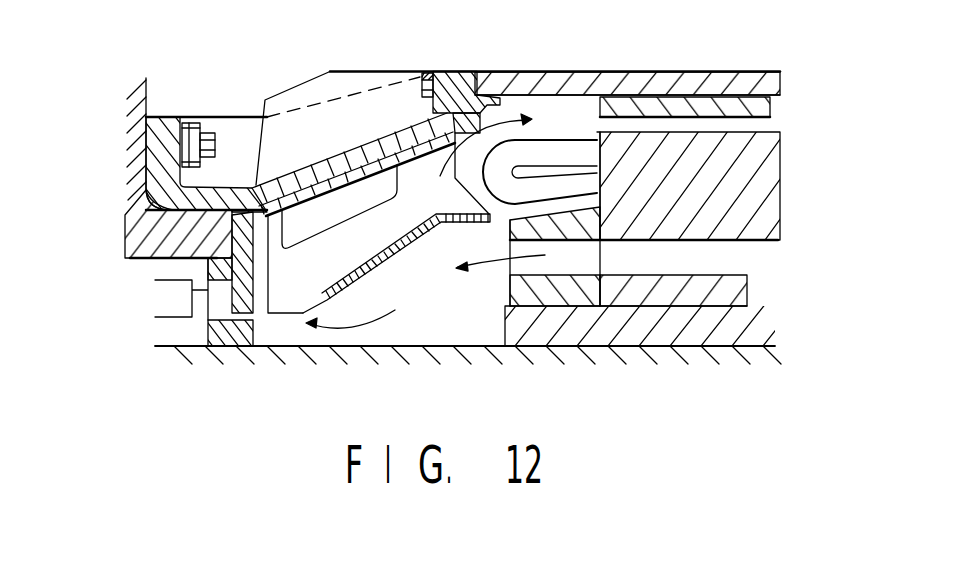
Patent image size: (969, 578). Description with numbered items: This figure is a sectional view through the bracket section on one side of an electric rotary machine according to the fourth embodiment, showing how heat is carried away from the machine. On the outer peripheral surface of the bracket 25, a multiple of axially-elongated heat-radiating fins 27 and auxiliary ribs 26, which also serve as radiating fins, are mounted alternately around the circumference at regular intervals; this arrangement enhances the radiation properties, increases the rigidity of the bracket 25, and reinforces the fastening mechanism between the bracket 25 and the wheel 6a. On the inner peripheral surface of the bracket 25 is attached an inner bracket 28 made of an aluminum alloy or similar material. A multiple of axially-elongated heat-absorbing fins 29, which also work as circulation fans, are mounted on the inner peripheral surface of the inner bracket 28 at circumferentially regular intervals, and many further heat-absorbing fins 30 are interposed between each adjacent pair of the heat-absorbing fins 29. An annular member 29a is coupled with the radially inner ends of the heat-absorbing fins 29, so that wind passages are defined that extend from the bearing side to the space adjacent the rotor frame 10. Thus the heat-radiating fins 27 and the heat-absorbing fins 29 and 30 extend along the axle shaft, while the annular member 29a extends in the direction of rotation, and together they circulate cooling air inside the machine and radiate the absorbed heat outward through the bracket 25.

The wheel 6a is at (140, 130).
The rotor frame 10 is at (656, 80).
The bracket 25 is at (319, 168).
The auxiliary rib 26 is at (207, 117).
The heat-radiating fin 27 is at (377, 71).
The inner bracket 28 is at (415, 155).
The heat-absorbing fin 29 is at (286, 294).
The annular member 29a is at (415, 248).
The heat-absorbing fin 30 is at (343, 212).